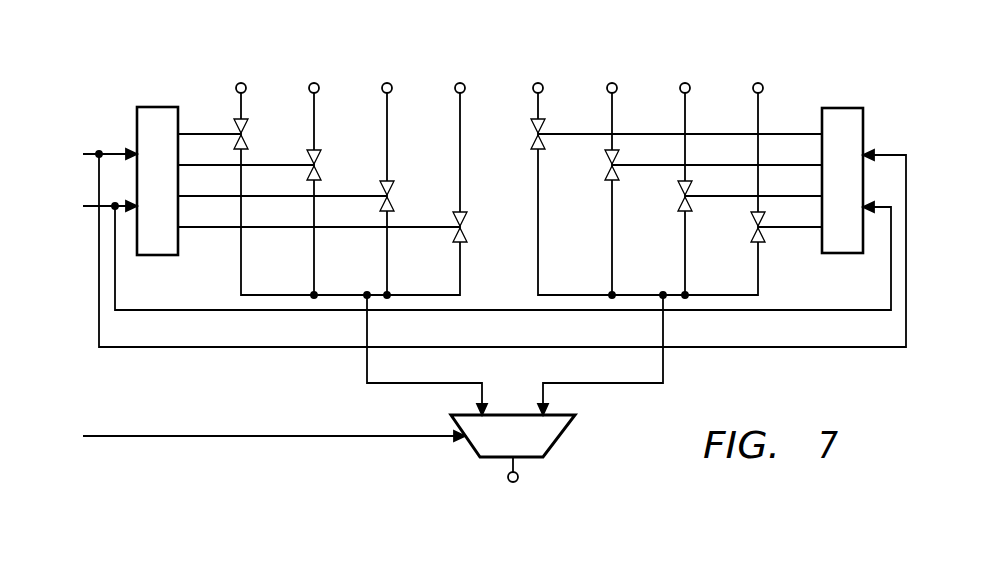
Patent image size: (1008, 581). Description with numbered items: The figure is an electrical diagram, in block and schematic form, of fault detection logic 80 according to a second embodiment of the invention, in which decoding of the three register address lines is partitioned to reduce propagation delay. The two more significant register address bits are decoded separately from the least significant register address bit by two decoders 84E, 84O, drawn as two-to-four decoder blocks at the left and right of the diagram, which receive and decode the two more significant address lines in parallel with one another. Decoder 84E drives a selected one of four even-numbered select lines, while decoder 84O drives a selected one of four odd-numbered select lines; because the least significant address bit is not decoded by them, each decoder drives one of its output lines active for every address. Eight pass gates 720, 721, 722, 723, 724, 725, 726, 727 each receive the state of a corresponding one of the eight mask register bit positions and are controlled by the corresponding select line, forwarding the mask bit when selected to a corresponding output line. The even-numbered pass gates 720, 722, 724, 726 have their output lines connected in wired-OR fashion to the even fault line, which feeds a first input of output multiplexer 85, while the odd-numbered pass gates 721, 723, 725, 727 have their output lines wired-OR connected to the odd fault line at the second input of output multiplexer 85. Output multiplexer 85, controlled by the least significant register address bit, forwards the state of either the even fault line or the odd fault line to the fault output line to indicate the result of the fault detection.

The fault detection logic 80 is at (195, 50).
The decoder 84E is at (157, 107).
The decoder 84O is at (843, 108).
The pass gate 720 is at (249, 135).
The pass gate 721 is at (530, 132).
The pass gate 722 is at (322, 167).
The pass gate 723 is at (603, 164).
The pass gate 724 is at (395, 198).
The pass gate 725 is at (676, 196).
The pass gate 726 is at (468, 228).
The pass gate 727 is at (750, 226).
The output multiplexer 85 is at (562, 441).